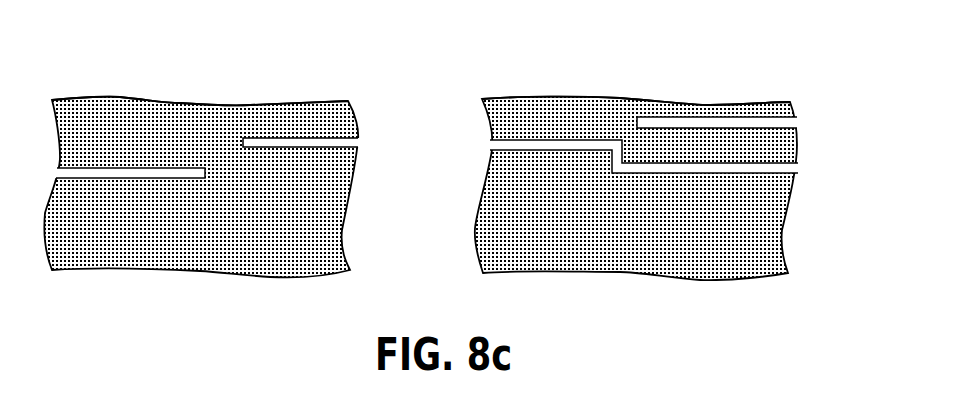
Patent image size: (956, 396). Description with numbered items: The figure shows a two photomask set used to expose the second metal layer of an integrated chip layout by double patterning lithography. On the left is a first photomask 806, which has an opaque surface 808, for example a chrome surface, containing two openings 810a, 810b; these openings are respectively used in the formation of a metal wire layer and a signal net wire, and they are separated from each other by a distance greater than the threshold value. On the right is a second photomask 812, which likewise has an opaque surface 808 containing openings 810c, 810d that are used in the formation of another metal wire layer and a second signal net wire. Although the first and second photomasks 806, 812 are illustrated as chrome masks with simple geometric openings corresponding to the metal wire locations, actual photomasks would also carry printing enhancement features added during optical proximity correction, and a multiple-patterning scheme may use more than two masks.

The first photomask 806 is at (89, 57).
The second photomask 812 is at (507, 57).
The opaque surface 808 is at (305, 97).
The opening 810a is at (216, 176).
The opening 810b is at (363, 133).
The opening 810c is at (806, 116).
The opening 810d is at (806, 172).